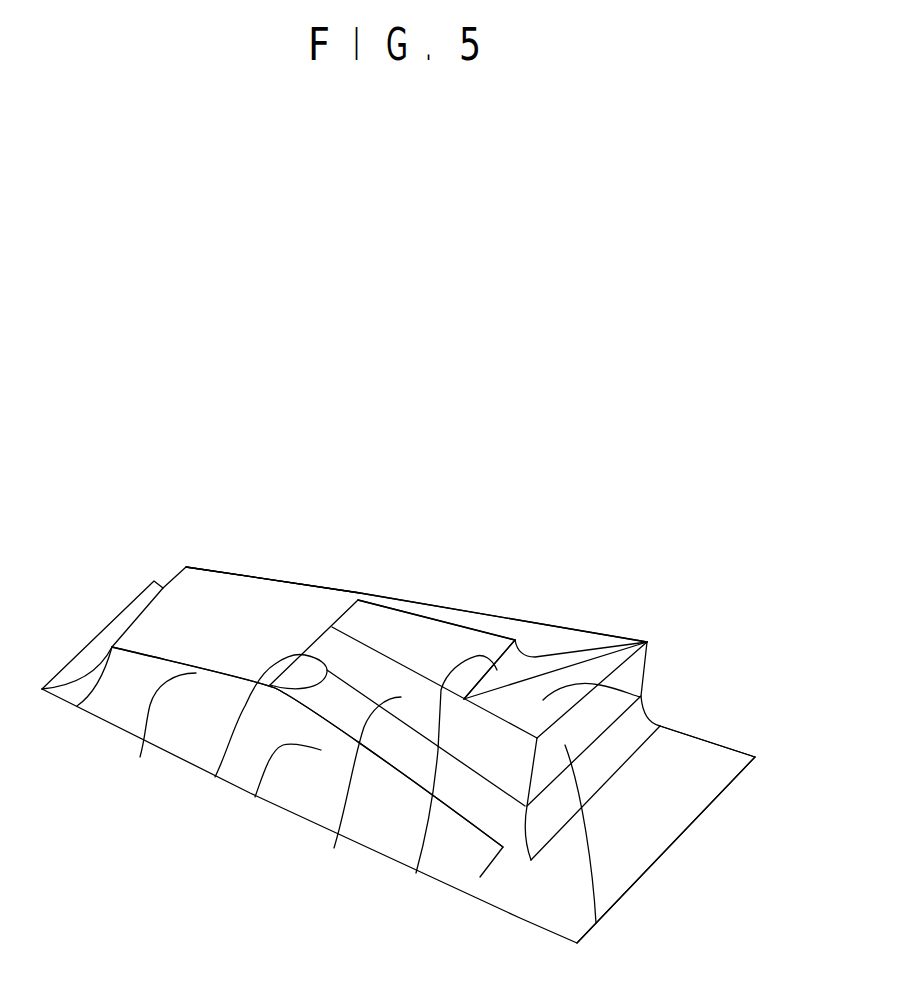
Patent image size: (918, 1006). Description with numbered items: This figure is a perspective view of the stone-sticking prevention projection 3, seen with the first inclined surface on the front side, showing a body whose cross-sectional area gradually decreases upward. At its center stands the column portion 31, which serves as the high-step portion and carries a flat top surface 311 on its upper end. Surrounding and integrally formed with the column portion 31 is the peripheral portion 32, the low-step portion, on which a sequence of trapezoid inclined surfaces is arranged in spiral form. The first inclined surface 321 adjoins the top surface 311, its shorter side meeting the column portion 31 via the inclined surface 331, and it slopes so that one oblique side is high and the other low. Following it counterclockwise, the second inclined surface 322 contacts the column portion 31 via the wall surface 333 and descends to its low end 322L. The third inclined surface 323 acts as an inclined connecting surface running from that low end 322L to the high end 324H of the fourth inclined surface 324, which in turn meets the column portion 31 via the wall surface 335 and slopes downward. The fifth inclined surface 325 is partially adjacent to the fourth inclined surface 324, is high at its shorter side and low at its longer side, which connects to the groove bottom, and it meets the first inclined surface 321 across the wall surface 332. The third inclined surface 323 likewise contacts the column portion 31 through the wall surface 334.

The stone-sticking prevention projection 3 is at (600, 509).
The column portion 31 is at (440, 640).
The peripheral portion 32 is at (577, 672).
The top surface 311 is at (385, 622).
The first inclined surface 321 is at (640, 697).
The second inclined surface 322 is at (326, 603).
The low end of the second inclined surface 322L is at (252, 587).
The third inclined surface 323 is at (165, 625).
The fourth inclined surface 324 is at (255, 797).
The high end of the fourth inclined surface 324H is at (140, 757).
The fifth inclined surface 325 is at (618, 835).
The inclined surface 331 is at (416, 873).
The wall surface 332 is at (596, 923).
The wall surface 333 is at (430, 640).
The wall surface 334 is at (215, 777).
The wall surface 335 is at (334, 848).